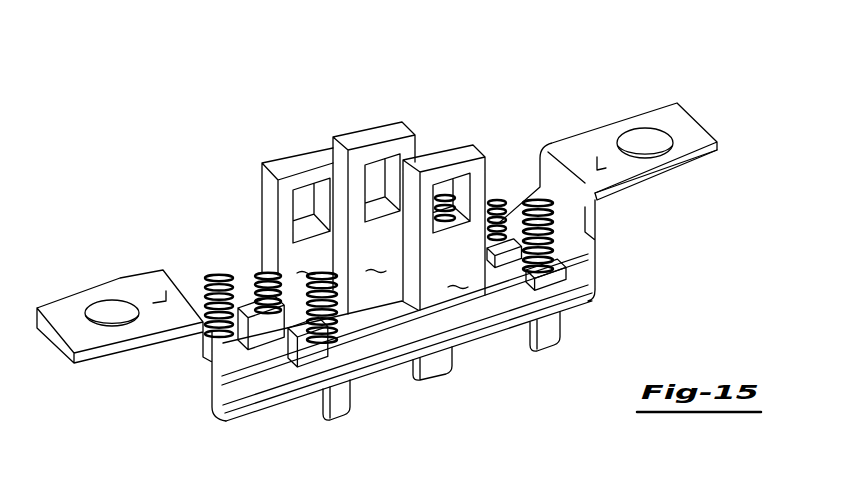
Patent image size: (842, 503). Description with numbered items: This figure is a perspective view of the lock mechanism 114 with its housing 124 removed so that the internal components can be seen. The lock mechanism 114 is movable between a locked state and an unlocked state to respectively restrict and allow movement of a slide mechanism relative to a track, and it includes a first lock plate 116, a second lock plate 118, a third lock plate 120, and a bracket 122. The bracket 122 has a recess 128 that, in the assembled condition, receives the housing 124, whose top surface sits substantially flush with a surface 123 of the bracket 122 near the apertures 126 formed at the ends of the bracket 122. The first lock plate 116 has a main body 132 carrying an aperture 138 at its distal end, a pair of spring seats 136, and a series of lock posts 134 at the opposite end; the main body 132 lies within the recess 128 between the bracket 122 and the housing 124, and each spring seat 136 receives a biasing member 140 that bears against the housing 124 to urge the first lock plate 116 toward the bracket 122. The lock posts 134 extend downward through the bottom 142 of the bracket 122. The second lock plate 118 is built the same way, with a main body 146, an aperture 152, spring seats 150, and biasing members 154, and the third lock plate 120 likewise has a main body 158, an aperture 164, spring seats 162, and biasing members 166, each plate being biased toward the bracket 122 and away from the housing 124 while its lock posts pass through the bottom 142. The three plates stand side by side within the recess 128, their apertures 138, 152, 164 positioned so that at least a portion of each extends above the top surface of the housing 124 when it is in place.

The lock mechanism 114 is at (161, 158).
The first lock plate 116 is at (463, 146).
The second lock plate 118 is at (395, 120).
The third lock plate 120 is at (262, 163).
The bracket 122 is at (72, 303).
The surface 123 is at (160, 295).
The housing 124 is at (608, 162).
The apertures 126 is at (113, 317).
The recess 128 is at (228, 397).
The main body 132 is at (459, 274).
The lock posts 134 is at (341, 410).
The spring seats 136 is at (340, 350).
The aperture 138 is at (449, 197).
The biasing member 140 is at (340, 305).
The bottom 142 is at (308, 400).
The main body 146 is at (378, 258).
The spring seats 150 is at (262, 352).
The aperture 152 is at (378, 168).
The biasing member 154 is at (260, 275).
The main body 158 is at (309, 262).
The spring seats 162 is at (228, 348).
The aperture 164 is at (316, 193).
The biasing member 166 is at (213, 275).